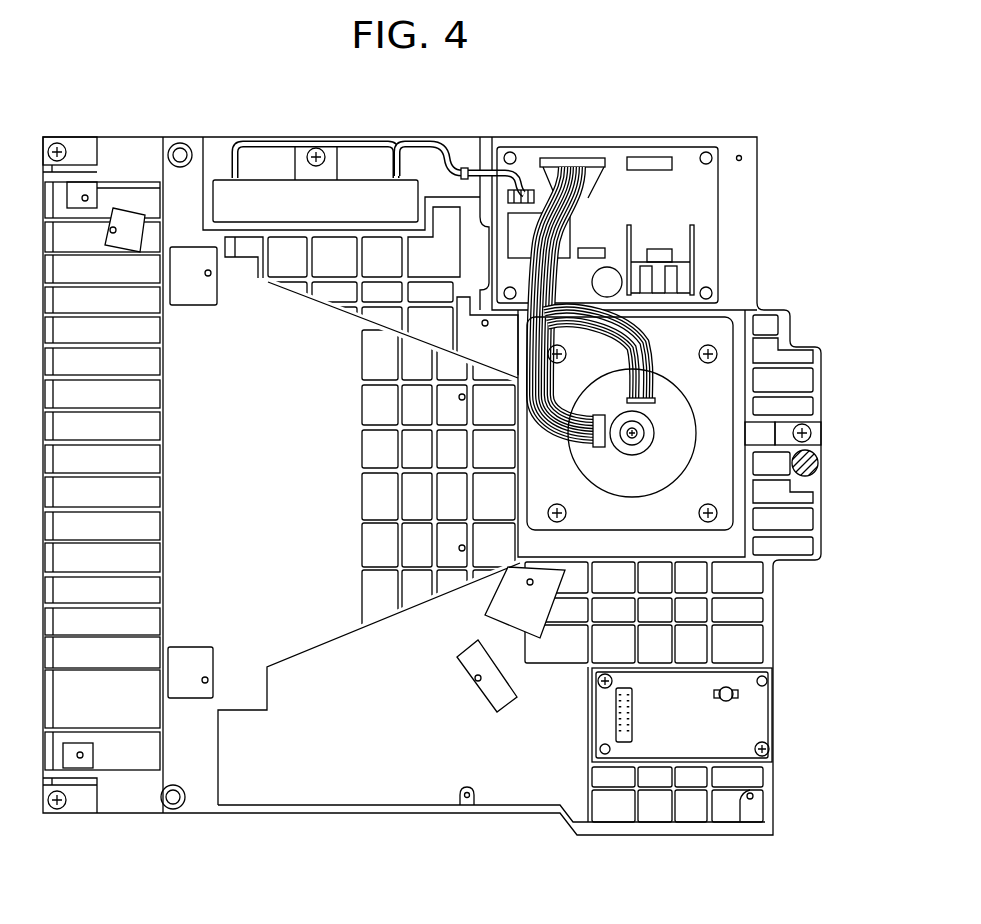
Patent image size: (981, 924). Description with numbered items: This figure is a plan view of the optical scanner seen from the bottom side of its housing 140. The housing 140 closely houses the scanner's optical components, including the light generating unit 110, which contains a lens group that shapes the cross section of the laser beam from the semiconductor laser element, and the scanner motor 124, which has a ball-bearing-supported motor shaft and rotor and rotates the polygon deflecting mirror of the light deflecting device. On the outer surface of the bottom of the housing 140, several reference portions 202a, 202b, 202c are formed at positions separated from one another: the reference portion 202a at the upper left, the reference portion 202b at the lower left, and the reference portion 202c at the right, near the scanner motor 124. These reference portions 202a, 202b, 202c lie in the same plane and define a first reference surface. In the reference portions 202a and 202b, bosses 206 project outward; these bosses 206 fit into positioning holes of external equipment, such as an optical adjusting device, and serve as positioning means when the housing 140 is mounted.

The housing 140 is at (773, 625).
The scanner motor 124 is at (722, 516).
The light generating unit 110 is at (752, 719).
The boss 206 is at (176, 142).
The reference portion 202a is at (186, 143).
The reference portion 202b is at (180, 810).
The reference portion 202c is at (818, 466).